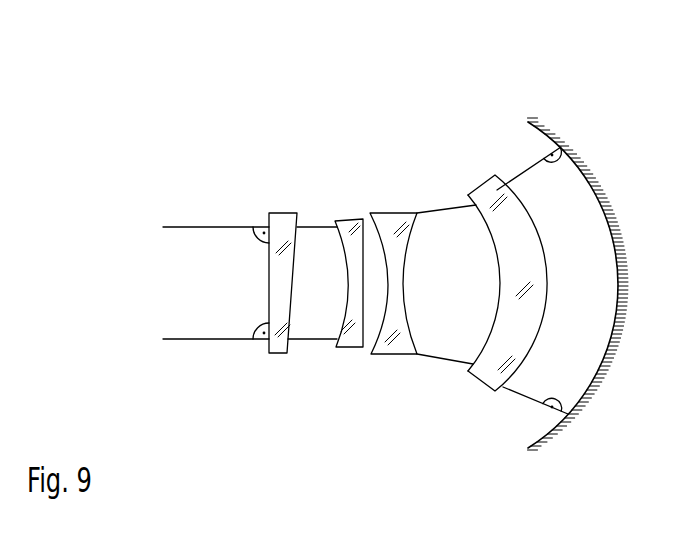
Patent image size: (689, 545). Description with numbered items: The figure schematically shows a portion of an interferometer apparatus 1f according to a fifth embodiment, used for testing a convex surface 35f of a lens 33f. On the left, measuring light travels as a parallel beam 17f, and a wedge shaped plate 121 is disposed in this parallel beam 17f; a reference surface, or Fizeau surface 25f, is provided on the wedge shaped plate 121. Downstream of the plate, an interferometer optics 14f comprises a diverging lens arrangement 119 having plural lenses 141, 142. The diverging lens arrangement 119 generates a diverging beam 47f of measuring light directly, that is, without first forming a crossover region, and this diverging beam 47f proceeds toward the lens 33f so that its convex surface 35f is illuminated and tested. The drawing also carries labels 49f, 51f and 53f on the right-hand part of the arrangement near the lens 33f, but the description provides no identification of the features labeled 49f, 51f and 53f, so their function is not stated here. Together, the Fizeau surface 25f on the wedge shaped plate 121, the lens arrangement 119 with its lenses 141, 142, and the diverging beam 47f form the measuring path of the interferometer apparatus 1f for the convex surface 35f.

The interferometer apparatus 1f is at (212, 180).
The interferometer optics 14f is at (386, 135).
The parallel beam 17f is at (210, 341).
The reference surface 25f is at (268, 226).
The wedge shaped plate 121 is at (275, 355).
The diverging lens arrangement 119 is at (418, 357).
The lens 141 is at (348, 218).
The lens 142 is at (398, 213).
The diverging beam 47f is at (445, 359).
The front lens surface 49f is at (496, 262).
The convex surface 35f is at (548, 266).
The lens 33f is at (478, 385).
The lens holder 53f is at (530, 123).
The concave mirror 51f is at (604, 203).